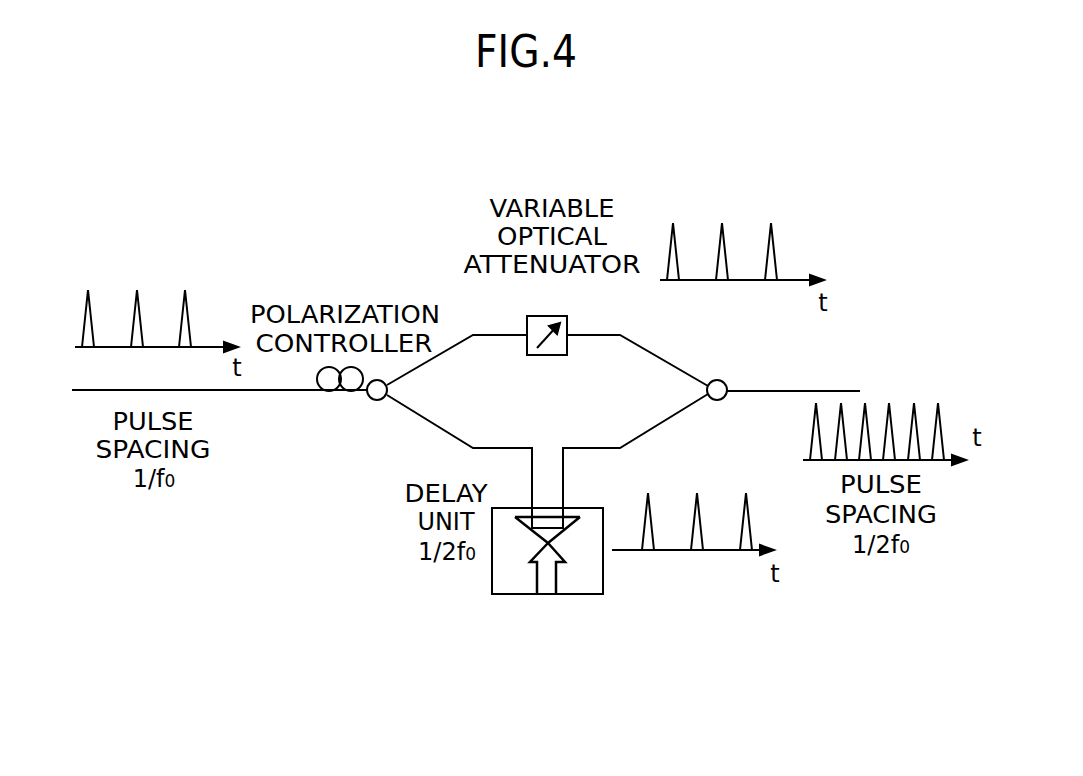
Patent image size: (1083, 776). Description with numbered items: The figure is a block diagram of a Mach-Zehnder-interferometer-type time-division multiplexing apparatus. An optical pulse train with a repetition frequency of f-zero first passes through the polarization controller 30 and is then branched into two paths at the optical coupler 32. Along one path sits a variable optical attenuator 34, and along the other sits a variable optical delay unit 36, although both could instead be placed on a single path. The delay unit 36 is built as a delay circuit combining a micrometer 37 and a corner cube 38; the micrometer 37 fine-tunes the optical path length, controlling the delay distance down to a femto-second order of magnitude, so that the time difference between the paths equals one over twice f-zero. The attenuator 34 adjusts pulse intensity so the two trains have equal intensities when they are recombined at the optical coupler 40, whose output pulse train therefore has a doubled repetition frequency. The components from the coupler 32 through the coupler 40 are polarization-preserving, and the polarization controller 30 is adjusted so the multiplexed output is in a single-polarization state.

The polarization controller 30 is at (334, 392).
The optical coupler 32 is at (382, 401).
The variable optical attenuator 34 is at (567, 322).
The variable optical delay unit 36 is at (491, 576).
The micrometer 37 is at (559, 574).
The corner cube 38 is at (580, 516).
The optical coupler 40 is at (718, 401).